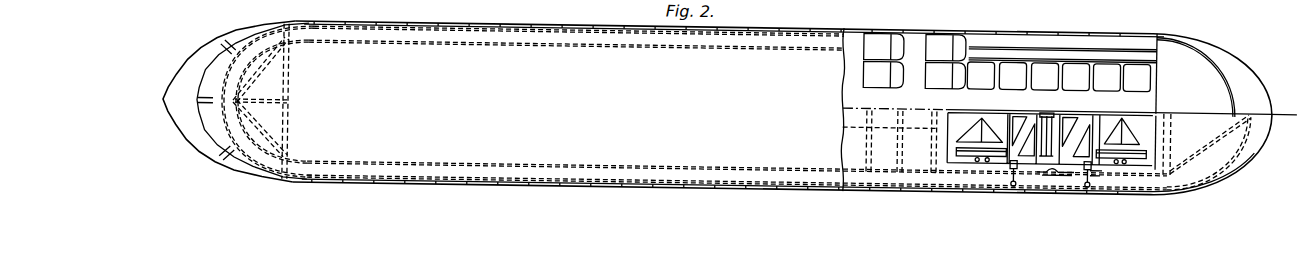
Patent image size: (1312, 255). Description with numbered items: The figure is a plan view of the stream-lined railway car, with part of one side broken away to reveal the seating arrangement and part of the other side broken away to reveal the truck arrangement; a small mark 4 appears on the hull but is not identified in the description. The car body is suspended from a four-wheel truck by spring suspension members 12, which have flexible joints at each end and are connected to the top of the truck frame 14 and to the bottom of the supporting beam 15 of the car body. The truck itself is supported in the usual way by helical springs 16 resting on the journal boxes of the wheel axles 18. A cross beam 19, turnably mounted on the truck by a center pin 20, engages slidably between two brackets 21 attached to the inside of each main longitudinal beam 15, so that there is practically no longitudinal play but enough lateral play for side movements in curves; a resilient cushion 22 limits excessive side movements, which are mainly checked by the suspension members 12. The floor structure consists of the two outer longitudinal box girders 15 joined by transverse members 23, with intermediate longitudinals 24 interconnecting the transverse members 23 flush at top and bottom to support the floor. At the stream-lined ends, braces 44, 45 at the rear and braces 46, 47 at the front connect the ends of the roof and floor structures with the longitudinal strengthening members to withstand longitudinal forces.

The hull 4 is at (730, 108).
The spring suspension member 12 is at (1104, 198).
The truck frame 14 is at (1050, 193).
The supporting beam 15 is at (736, 201).
The helical spring 16 is at (1062, 192).
The wheel axle 18 is at (1060, 169).
The cross beam 19 is at (1028, 170).
The center pin 20 is at (1060, 108).
The bracket 21 is at (1057, 198).
The resilient cushion 22 is at (1042, 196).
The transverse member 23 is at (901, 167).
The intermediate longitudinal 24 is at (889, 175).
The brace 44 is at (1219, 154).
The brace 45 is at (1225, 145).
The brace 46 is at (260, 126).
The brace 47 is at (255, 157).